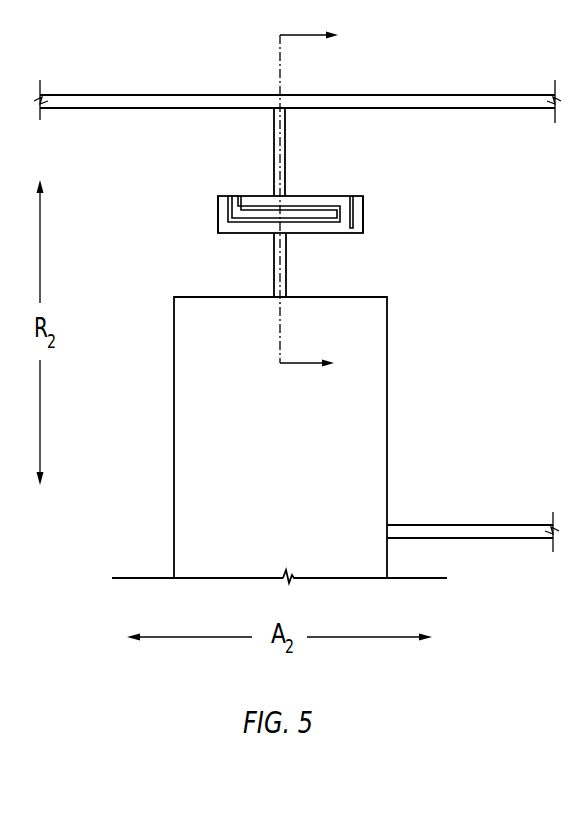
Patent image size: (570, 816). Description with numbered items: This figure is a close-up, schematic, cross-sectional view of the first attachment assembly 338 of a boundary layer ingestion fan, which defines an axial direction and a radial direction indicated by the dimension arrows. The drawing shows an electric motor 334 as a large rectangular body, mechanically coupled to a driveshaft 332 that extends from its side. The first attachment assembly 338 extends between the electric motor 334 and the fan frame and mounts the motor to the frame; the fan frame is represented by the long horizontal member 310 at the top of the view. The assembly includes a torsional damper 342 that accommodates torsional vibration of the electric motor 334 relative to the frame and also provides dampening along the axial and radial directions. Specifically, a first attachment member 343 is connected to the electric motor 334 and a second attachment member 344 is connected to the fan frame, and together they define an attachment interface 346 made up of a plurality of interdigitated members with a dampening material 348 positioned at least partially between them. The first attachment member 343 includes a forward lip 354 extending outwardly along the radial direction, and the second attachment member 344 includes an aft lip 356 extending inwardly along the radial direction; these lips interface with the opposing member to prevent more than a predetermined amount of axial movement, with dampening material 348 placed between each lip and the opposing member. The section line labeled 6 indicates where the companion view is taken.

The Line 6- 6 is at (317, 201).
The panel 310 is at (137, 95).
The driveshaft 332 is at (423, 532).
The electric motor 334 is at (190, 438).
The first attachment assembly 338 is at (150, 186).
The torsional damper 342 is at (455, 173).
The first attachment member 343 is at (274, 252).
The second attachment member 344 is at (279, 152).
The attachment interface 346 is at (334, 200).
The dampening material 348 is at (305, 207).
The forward lip 354 is at (218, 222).
The aft lip 356 is at (353, 210).